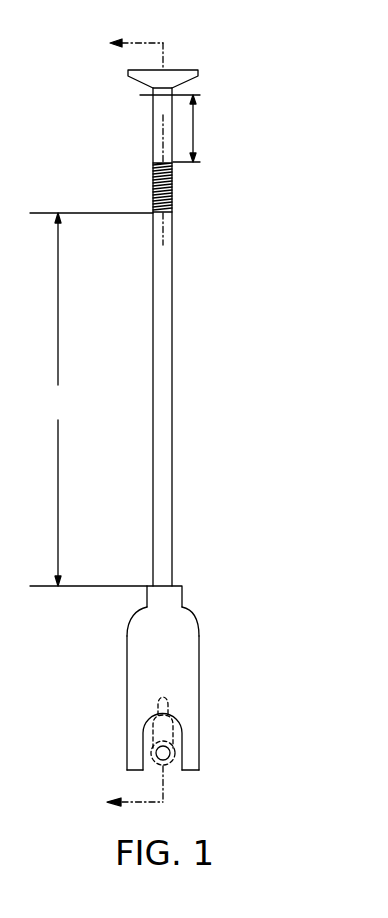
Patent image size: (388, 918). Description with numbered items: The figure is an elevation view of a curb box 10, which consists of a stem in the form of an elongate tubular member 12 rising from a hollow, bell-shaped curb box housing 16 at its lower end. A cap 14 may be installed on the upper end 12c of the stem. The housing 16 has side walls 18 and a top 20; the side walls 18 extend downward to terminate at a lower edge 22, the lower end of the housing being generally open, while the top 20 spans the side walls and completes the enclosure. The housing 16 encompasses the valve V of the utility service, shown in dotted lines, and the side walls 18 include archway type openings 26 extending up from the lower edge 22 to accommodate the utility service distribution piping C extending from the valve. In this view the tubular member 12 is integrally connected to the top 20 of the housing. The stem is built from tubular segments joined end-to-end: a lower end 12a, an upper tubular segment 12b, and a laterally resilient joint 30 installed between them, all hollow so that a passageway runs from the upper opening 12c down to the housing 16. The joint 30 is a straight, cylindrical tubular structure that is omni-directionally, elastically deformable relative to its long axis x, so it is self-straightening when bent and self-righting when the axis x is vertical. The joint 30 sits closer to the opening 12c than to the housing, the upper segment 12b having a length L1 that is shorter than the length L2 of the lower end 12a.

The curb box 10 is at (292, 32).
The elongate tubular member 12 is at (173, 406).
The lower end 12a is at (153, 333).
The upper tubular segment 12b is at (153, 113).
The upper end 12c is at (140, 95).
The cap 14 is at (186, 79).
The curb box housing 16 is at (169, 674).
The side walls 18 is at (199, 688).
The top 20 is at (183, 596).
The lower edge 22 is at (132, 770).
The archway type openings 26 is at (176, 727).
The laterally resilient joint 30 is at (153, 182).
The utility service distribution piping C is at (173, 753).
The valve V is at (160, 733).
The long axis x is at (163, 225).
The length L1 is at (193, 130).
The length L2 is at (91, 399).